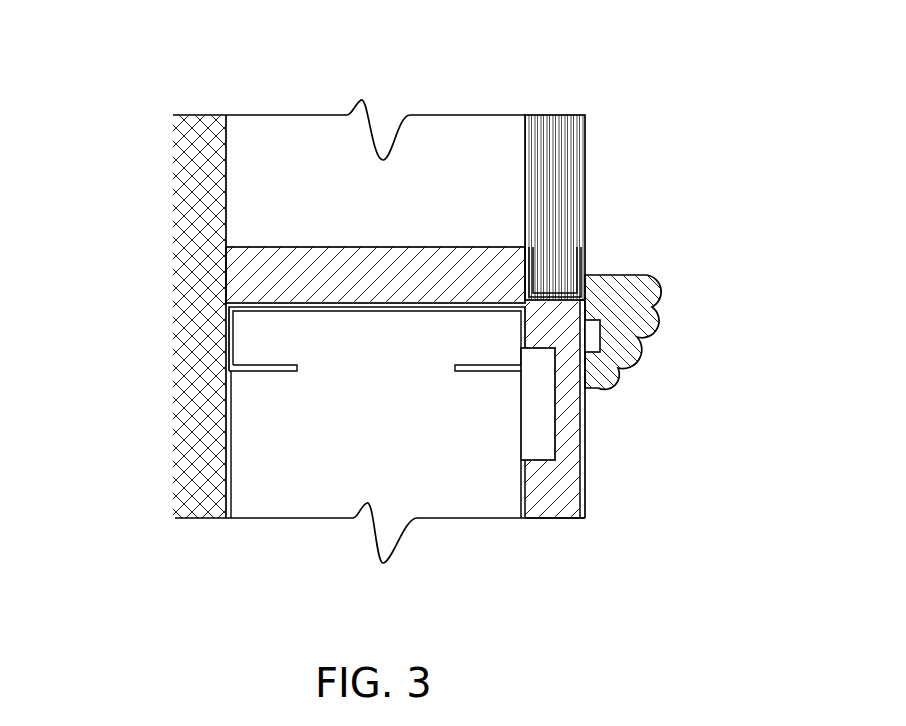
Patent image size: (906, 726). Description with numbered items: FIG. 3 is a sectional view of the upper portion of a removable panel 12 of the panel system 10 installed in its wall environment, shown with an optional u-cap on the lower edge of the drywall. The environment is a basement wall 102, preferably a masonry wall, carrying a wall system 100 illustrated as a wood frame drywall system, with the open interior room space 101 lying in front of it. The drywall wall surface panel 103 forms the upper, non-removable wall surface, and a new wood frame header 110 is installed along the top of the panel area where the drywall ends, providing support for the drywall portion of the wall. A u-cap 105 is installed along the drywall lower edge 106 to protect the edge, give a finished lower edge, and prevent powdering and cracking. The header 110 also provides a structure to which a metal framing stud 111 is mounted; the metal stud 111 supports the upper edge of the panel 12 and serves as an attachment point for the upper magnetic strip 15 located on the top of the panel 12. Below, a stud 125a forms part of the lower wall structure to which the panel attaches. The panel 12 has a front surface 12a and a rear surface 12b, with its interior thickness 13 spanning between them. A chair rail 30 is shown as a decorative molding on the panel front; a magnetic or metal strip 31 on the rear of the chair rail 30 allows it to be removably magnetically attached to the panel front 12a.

The wall system 100 is at (207, 115).
The interior space 101 is at (445, 132).
The basement wall 102 is at (193, 227).
The drywall wall surface panel 103 is at (565, 132).
The u-cap 105 is at (588, 283).
The drywall lower edge 106 is at (563, 272).
The wood frame header 110 is at (423, 255).
The metal framing stud 111 is at (230, 350).
The stud 125a is at (285, 462).
The panel system 10 is at (630, 452).
The panel 12 is at (586, 515).
The front surface 12a is at (587, 493).
The rear surface 12b is at (518, 506).
The thickness 13 is at (558, 512).
The upper magnetic strip 15 is at (534, 405).
The chair rail 30 is at (664, 297).
The magnetic or metal strip 31 is at (600, 343).